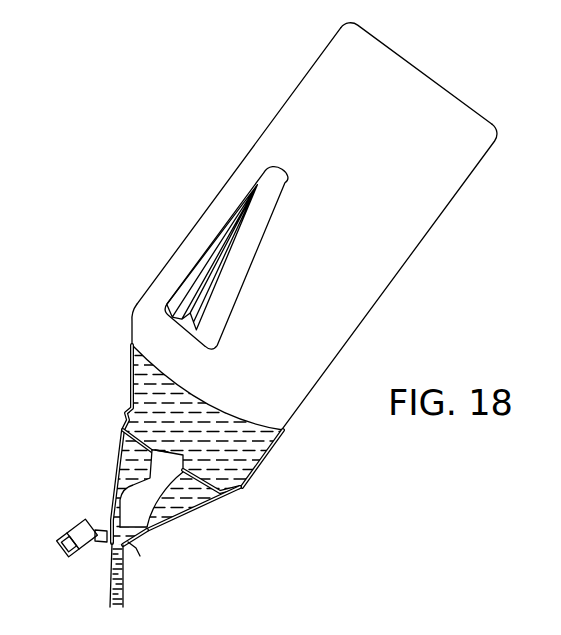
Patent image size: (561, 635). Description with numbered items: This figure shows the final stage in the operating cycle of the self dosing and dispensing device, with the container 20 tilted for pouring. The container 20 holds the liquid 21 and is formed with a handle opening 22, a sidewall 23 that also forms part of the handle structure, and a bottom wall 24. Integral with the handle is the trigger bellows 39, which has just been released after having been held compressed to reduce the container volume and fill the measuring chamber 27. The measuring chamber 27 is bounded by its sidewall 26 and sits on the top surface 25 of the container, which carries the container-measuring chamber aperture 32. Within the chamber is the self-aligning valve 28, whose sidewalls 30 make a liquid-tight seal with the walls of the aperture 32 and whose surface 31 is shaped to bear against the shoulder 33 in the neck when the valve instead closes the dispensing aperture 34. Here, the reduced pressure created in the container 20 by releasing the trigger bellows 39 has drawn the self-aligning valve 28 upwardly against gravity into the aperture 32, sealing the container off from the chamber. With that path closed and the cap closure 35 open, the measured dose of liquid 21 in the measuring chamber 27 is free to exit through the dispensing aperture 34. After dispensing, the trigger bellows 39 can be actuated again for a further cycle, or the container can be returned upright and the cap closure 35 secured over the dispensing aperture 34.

The container 20 is at (129, 371).
The liquid 21 is at (242, 450).
The handle opening 22 is at (266, 203).
The sidewall 23 is at (448, 208).
The bottom wall 24 is at (465, 98).
The top surface 25 is at (122, 442).
The sidewall of measuring chamber 26 is at (207, 500).
The measuring chamber 27 is at (200, 502).
The self-aligning valve 28 is at (157, 479).
The sidewalls of self-aligning valve 30 is at (148, 470).
The surface of valve 31 is at (147, 536).
The container-measuring chamber aperture 32 is at (150, 458).
The shoulder 33 is at (140, 556).
The dispensing aperture 34 is at (110, 546).
The cap closure 35 is at (67, 528).
The trigger bellows 39 is at (197, 297).